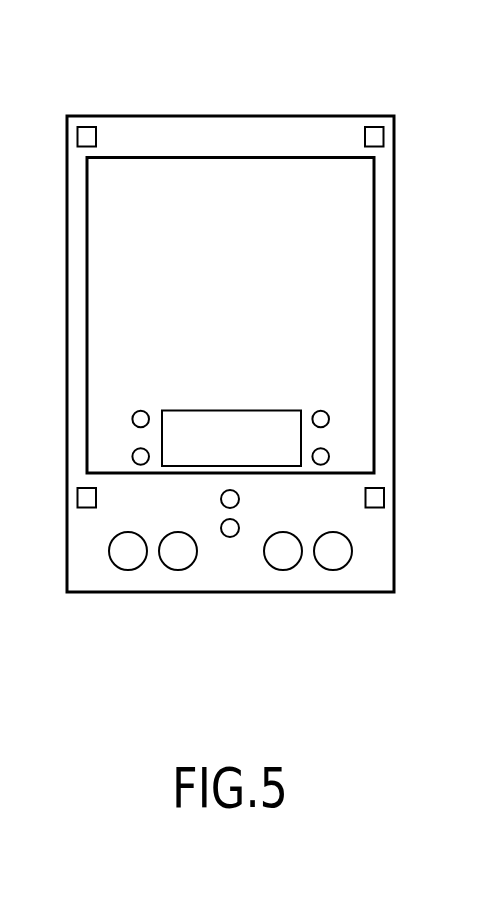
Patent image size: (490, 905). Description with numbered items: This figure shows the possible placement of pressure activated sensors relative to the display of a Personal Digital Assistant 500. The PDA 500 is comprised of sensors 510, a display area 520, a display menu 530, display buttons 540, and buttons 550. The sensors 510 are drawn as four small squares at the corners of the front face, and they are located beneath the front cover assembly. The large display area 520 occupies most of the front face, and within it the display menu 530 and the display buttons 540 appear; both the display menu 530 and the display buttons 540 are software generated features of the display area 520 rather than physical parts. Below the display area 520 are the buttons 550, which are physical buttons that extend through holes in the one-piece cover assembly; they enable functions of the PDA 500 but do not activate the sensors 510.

The Personal Digital Assistant 500 is at (200, 702).
The sensors 510 is at (87, 127).
The display area 520 is at (86, 339).
The display menu 530 is at (256, 410).
The display buttons 540 is at (329, 452).
The buttons 550 is at (139, 566).